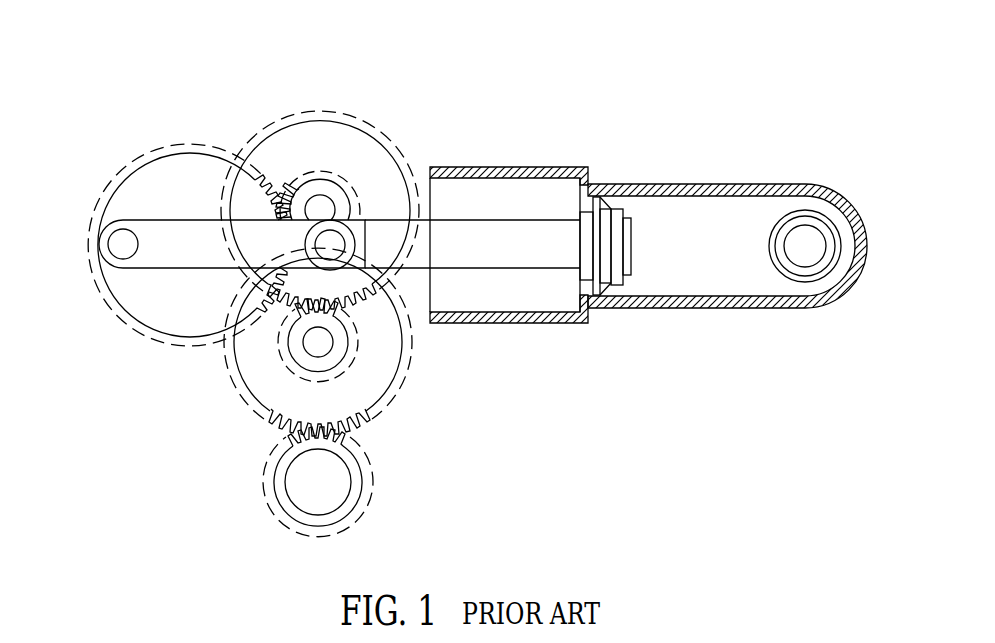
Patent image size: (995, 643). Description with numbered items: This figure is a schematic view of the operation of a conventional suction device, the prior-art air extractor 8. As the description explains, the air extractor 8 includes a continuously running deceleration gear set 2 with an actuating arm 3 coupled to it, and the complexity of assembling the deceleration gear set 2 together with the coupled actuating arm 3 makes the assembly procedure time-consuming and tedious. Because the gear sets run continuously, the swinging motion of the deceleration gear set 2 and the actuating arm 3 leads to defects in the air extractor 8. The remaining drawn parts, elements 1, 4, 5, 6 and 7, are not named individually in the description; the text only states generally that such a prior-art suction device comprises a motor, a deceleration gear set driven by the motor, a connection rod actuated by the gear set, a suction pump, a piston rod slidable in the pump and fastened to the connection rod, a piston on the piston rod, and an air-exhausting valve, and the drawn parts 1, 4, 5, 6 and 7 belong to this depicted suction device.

The motor 1 is at (293, 483).
The deceleration gear set 2 is at (300, 143).
The actuating arm 3 is at (187, 247).
The cylinder 4 is at (712, 184).
The piston 5 is at (500, 238).
The seal assembly 6 is at (603, 210).
The pivot mount 7 is at (807, 280).
The air extractor 8 is at (469, 381).